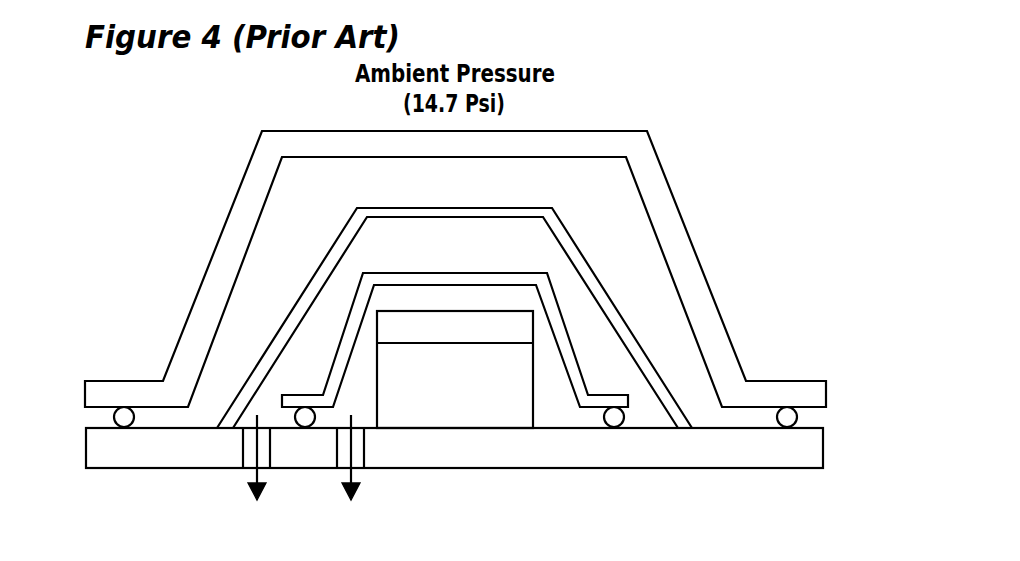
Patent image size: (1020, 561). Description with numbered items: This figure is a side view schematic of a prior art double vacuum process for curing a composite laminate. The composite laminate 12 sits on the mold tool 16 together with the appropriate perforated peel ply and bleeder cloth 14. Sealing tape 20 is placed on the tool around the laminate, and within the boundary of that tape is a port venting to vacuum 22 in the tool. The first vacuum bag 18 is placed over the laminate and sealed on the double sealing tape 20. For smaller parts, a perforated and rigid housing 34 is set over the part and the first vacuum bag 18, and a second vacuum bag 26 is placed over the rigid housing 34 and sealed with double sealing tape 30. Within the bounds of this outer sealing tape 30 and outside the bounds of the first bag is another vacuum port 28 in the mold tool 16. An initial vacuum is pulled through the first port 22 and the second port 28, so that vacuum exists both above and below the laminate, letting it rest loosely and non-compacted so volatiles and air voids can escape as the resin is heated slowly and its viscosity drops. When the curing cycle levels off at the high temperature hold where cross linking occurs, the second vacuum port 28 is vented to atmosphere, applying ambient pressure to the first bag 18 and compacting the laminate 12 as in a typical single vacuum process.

The composite laminate 12 is at (454, 465).
The perforated peel ply and bleeder cloth 14 is at (455, 357).
The mold tool 16 is at (454, 485).
The first vacuum bag 18 is at (455, 319).
The sealing tape 20 is at (428, 413).
The port venting to vacuum 22 is at (390, 457).
The second vacuum bag 26 is at (455, 269).
The vacuum port 28 is at (211, 461).
The double sealing tape 30 is at (465, 418).
The perforated and rigid housing 34 is at (454, 297).